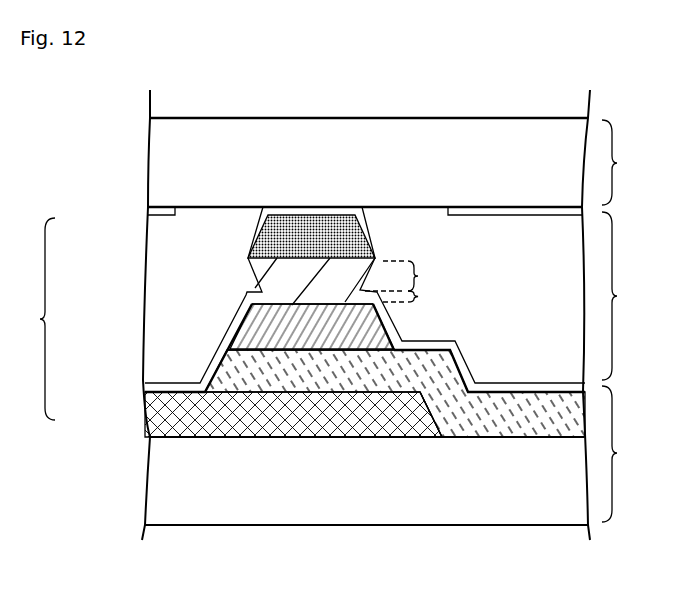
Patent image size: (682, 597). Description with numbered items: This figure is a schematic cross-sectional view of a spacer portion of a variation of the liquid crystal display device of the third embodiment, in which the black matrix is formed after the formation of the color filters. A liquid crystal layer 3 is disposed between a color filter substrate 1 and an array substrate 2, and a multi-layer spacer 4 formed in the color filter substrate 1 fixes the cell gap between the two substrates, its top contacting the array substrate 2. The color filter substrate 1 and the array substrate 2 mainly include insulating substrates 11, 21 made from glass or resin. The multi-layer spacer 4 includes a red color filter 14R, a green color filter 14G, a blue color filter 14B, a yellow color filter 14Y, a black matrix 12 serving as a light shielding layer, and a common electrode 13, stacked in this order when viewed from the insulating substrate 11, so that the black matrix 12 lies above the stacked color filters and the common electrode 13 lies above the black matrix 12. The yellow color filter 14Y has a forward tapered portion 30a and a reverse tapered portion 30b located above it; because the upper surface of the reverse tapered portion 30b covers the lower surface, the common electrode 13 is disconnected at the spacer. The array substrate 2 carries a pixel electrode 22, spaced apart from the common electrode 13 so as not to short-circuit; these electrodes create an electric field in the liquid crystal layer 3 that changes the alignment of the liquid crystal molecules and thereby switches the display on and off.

The color filter substrate 1 is at (621, 454).
The array substrate 2 is at (621, 162).
The liquid crystal layer 3 is at (621, 296).
The multi-layer spacer 4 is at (37, 319).
The insulating substrate 11 is at (155, 483).
The black matrix 12 is at (289, 237).
The common electrode 13 is at (264, 210).
The red color filter 14R is at (217, 413).
The green color filter 14G is at (240, 370).
The blue color filter 14B is at (250, 327).
The yellow color filter 14Y is at (273, 277).
The insulating substrate 21 is at (155, 165).
The pixel electrode 22 is at (150, 206).
The forward tapered portion 30a is at (415, 299).
The reverse tapered portion 30b is at (425, 275).